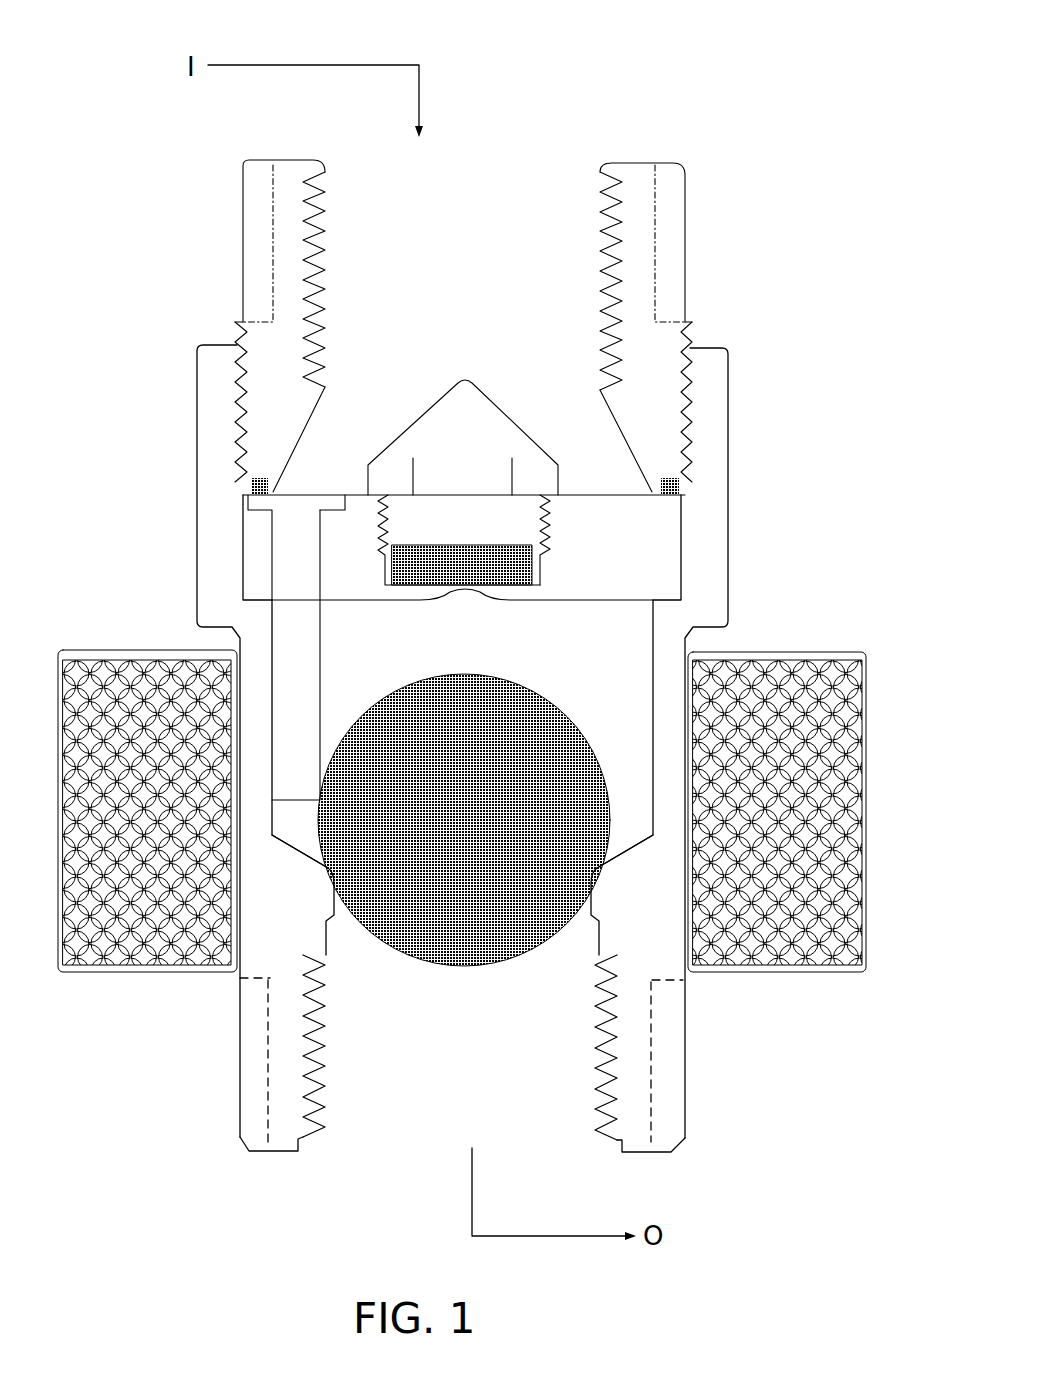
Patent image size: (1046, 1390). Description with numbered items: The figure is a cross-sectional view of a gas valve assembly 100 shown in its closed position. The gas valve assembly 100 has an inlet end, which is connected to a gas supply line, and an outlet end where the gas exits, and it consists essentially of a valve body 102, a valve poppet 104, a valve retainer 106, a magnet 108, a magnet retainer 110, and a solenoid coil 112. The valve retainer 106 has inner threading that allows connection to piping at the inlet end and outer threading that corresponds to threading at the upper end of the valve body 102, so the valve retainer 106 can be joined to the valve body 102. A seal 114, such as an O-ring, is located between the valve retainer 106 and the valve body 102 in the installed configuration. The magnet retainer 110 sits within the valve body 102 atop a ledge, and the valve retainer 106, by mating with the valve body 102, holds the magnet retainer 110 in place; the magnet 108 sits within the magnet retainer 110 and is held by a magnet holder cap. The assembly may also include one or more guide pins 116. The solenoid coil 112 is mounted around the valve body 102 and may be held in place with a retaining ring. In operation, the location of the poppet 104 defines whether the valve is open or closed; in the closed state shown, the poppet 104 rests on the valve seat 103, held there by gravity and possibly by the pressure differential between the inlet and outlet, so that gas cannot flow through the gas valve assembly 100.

The gas valve assembly 100 is at (566, 130).
The valve body 102 is at (723, 428).
The valve seat 103 is at (302, 858).
The valve poppet 104 is at (530, 898).
The valve retainer 106 is at (640, 250).
The magnet 108 is at (390, 578).
The magnet retainer 110 is at (662, 548).
The solenoid coil 112 is at (795, 697).
The seal 114 is at (250, 488).
The guide pin 116 is at (315, 493).